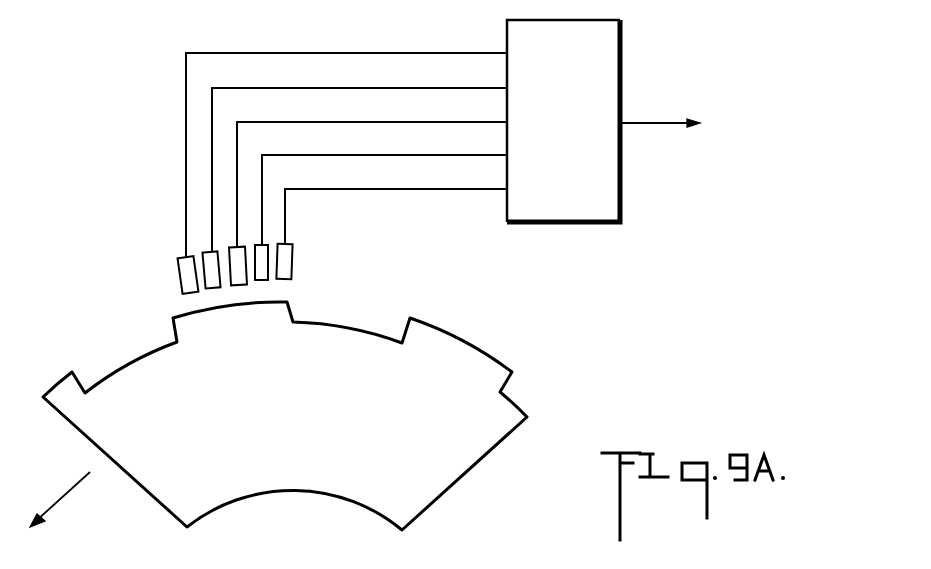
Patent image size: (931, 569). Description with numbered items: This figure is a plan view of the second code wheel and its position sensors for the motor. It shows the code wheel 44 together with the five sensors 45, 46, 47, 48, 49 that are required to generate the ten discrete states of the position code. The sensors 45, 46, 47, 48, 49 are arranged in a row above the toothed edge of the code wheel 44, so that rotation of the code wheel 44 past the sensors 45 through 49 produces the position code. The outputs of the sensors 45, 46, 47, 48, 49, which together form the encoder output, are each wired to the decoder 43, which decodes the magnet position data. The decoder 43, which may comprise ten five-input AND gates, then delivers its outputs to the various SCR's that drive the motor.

The decoder 43 is at (615, 60).
The code wheel 44 is at (462, 343).
The sensor 45 is at (182, 260).
The sensor 46 is at (207, 255).
The sensor 47 is at (238, 250).
The sensor 48 is at (265, 248).
The sensor 49 is at (288, 267).